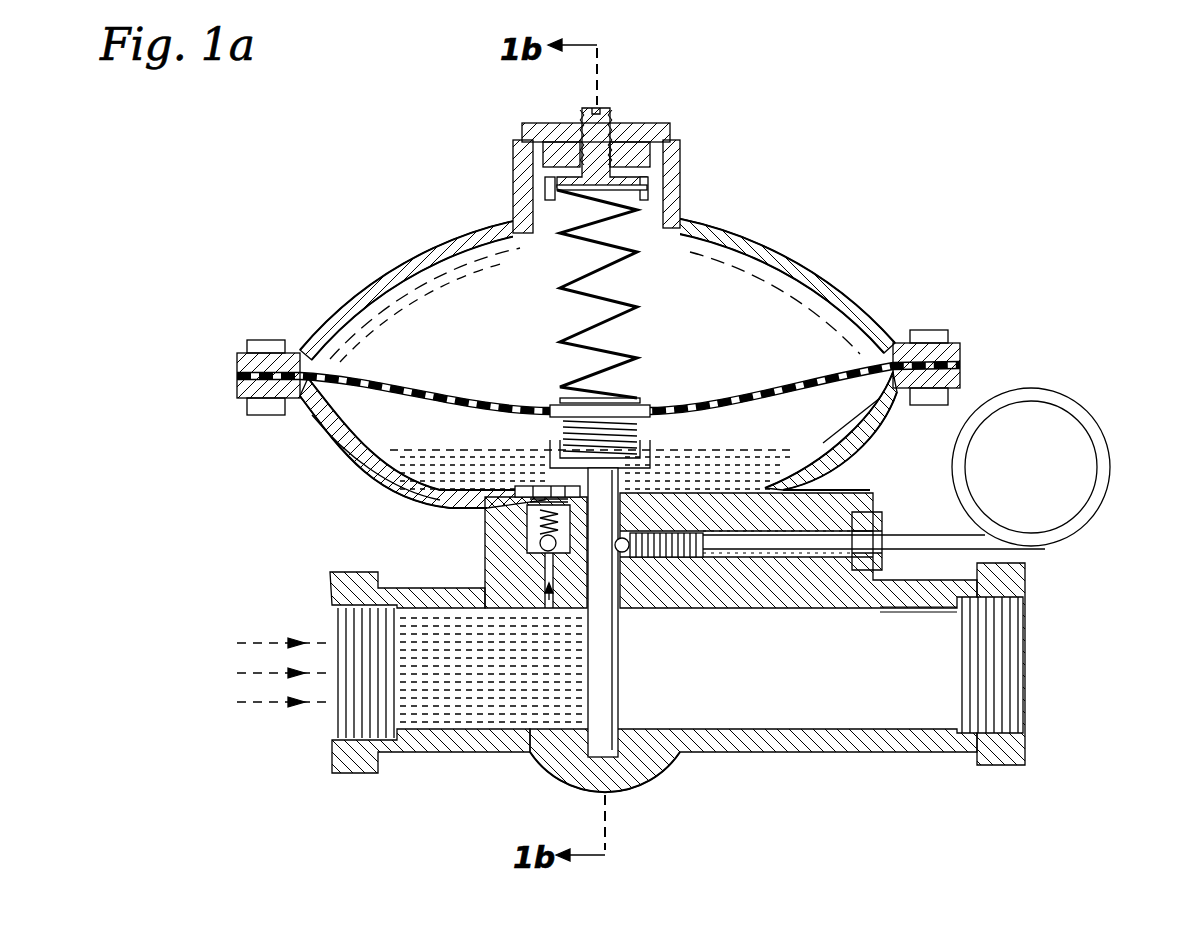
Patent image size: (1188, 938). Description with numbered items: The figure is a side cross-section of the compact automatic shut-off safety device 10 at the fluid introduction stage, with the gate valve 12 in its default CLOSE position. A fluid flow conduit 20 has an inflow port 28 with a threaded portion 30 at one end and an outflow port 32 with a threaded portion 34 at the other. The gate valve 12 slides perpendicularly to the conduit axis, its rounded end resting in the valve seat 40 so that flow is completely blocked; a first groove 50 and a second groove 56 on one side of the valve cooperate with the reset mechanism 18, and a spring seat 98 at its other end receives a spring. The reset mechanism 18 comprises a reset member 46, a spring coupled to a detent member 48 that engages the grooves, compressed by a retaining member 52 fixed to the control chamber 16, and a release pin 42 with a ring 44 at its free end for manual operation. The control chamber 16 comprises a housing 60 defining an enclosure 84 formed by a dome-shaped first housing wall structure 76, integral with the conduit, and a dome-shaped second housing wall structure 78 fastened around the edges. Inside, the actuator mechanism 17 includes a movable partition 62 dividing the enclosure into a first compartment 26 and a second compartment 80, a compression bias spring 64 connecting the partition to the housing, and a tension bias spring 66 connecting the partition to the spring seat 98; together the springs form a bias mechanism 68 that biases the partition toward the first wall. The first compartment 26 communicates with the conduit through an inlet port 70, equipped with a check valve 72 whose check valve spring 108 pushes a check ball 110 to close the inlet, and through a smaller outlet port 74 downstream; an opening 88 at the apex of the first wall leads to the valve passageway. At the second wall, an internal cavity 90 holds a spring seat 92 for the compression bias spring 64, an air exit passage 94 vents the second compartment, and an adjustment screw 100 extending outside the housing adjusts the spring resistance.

The safety device 10 is at (977, 106).
The gate valve 12 is at (614, 671).
The control chamber 16 is at (880, 281).
The actuator mechanism 17 is at (457, 315).
The reset mechanism 18 is at (1088, 396).
The fluid flow conduit 20 is at (412, 762).
The first compartment 26 is at (358, 414).
The inflow port 28 is at (336, 726).
The threaded portion 30 is at (342, 624).
The outflow port 32 is at (1022, 714).
The threaded portion 34 is at (1010, 631).
The valve seat 40 is at (582, 749).
The release pin 42 is at (1027, 546).
The ring 44 is at (1101, 450).
The reset member 46 is at (680, 556).
The detent member 48 is at (652, 557).
The first groove 50 is at (633, 555).
The retaining member 52 is at (836, 498).
The second groove 56 is at (640, 722).
The housing 60 is at (778, 238).
The movable partition 62 is at (440, 388).
The compression bias spring 64 is at (585, 331).
The tension bias spring 66 is at (548, 422).
The bias mechanism 68 is at (652, 377).
The inlet port 70 is at (546, 577).
The check valve 72 is at (520, 521).
The outlet port 74 is at (722, 485).
The first housing wall structure 76 is at (370, 463).
The second housing wall structure 78 is at (452, 244).
The second compartment 80 is at (362, 328).
The enclosure 84 is at (846, 346).
The opening 88 is at (624, 492).
The internal cavity 90 is at (652, 180).
The spring seat 92 is at (647, 190).
The air exit passage 94 is at (588, 122).
The spring seat 98 is at (640, 439).
The adjustment screw 100 is at (608, 113).
The check valve spring 108 is at (522, 514).
The check ball 110 is at (540, 543).